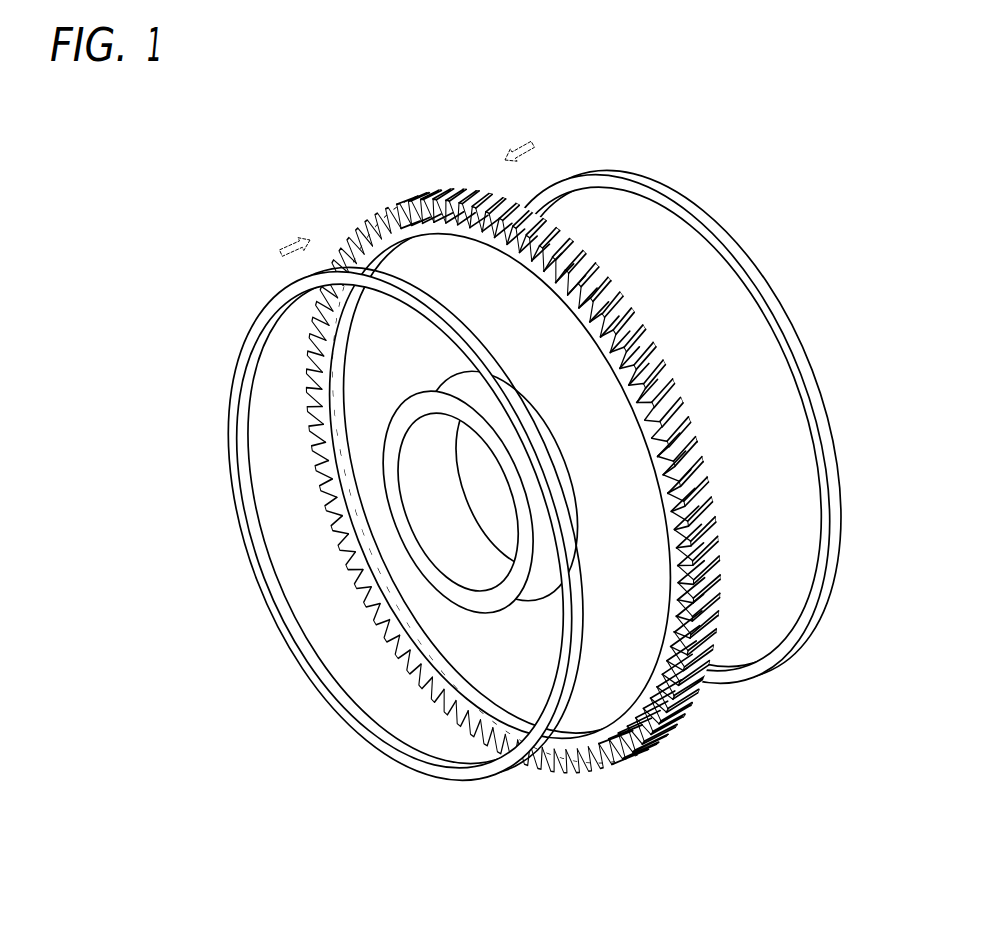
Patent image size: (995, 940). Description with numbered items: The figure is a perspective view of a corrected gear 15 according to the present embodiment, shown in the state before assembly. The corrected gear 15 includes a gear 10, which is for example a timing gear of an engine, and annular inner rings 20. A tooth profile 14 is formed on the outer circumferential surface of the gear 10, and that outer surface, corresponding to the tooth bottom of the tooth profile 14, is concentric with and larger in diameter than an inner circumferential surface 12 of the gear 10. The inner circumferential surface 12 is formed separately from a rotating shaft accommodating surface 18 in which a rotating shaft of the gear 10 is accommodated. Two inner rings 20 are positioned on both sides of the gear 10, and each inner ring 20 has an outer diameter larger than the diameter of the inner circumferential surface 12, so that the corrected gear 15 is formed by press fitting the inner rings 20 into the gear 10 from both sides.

The gear 10 is at (517, 479).
The inner circumferential surface 12 is at (507, 483).
The tooth profile 14 is at (517, 479).
The corrected gear 15 is at (709, 112).
The rotating shaft accommodating surface 18 is at (421, 437).
The annular inner ring 20 is at (789, 311).